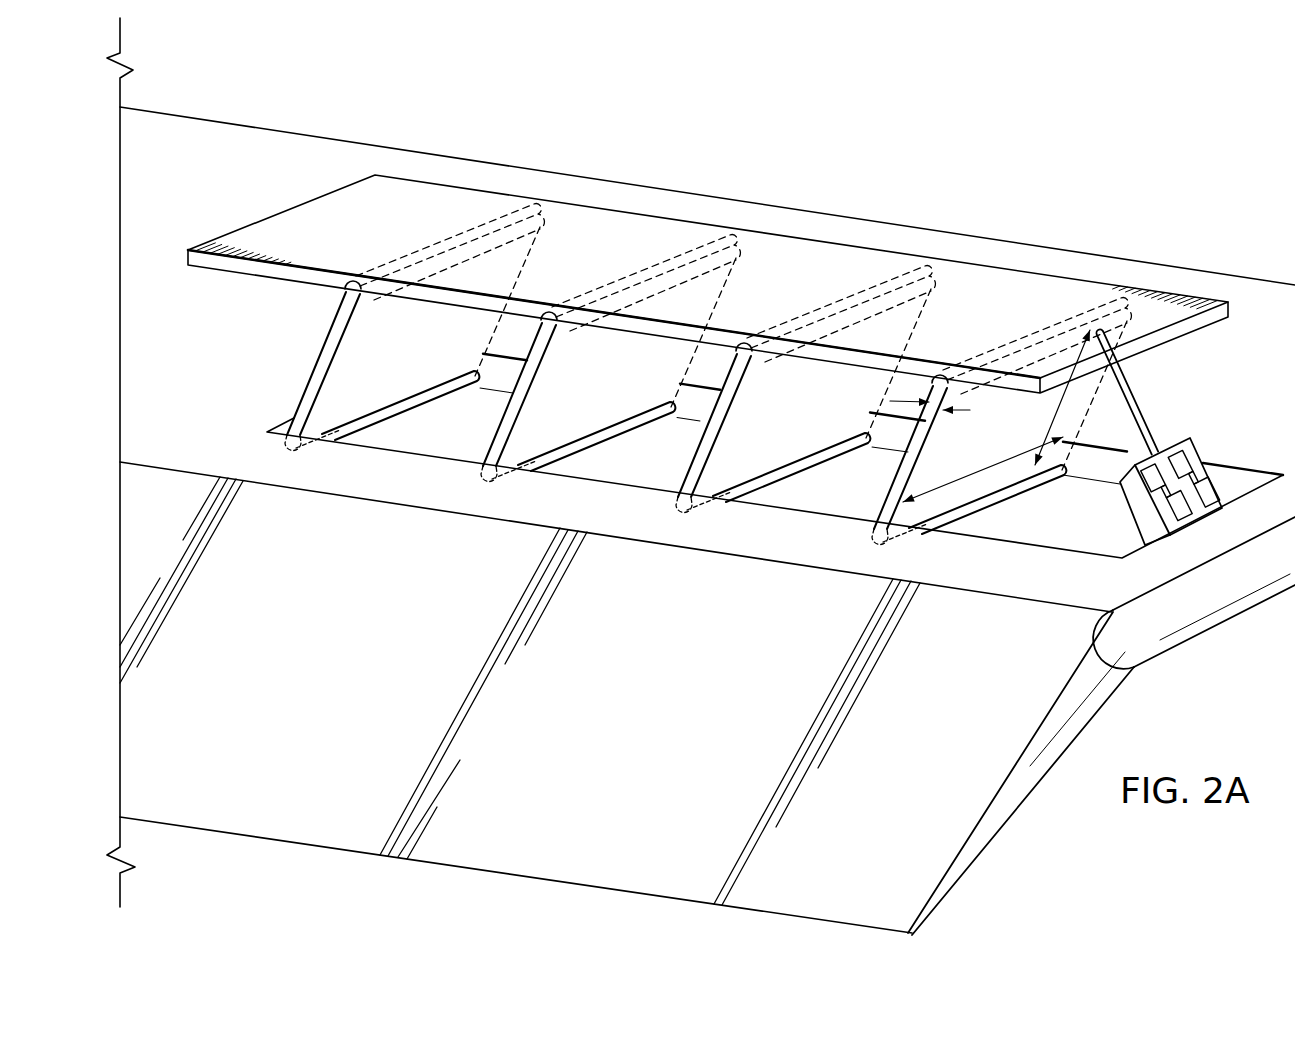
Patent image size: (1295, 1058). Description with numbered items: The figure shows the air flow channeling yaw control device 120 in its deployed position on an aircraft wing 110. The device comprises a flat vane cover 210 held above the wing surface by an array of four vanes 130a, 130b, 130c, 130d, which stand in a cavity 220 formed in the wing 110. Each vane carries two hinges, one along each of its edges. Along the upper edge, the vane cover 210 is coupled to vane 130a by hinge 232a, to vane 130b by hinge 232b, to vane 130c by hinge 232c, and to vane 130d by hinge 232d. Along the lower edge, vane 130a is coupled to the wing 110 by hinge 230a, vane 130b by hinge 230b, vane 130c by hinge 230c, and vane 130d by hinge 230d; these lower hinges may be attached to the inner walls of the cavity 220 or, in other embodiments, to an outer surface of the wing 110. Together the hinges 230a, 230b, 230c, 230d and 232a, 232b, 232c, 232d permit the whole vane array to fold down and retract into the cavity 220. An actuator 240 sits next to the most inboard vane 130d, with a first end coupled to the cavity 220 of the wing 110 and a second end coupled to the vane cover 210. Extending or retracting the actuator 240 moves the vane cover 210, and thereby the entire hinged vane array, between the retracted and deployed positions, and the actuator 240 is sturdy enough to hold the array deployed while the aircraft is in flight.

The wing 110 is at (1166, 663).
The air flow channeling yaw control device 120 is at (205, 204).
The vane cover 210 is at (323, 216).
The cavity 220 is at (1112, 547).
The vane 130a is at (414, 327).
The vane 130b is at (629, 398).
The vane 130c is at (805, 389).
The vane 130d is at (1001, 438).
The hinge 230a is at (405, 406).
The hinge 230b is at (565, 461).
The hinge 230c is at (795, 468).
The hinge 230d is at (991, 499).
The hinge 232a is at (446, 252).
The hinge 232b is at (671, 247).
The hinge 232c is at (837, 314).
The hinge 232d is at (1034, 346).
The actuator 240 is at (1174, 446).